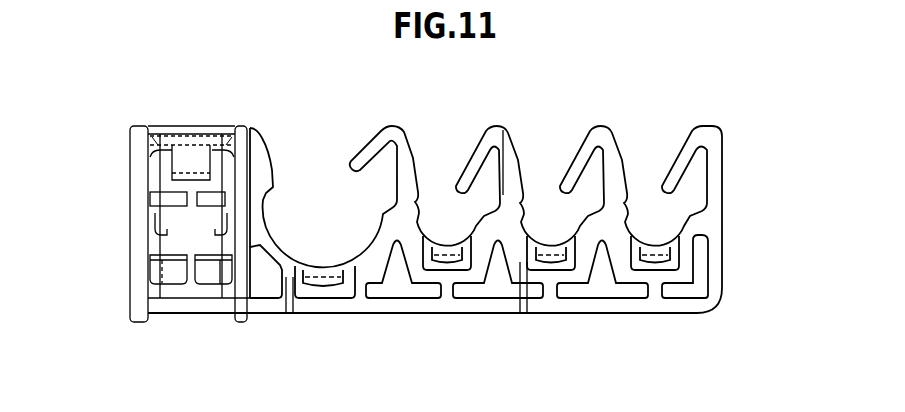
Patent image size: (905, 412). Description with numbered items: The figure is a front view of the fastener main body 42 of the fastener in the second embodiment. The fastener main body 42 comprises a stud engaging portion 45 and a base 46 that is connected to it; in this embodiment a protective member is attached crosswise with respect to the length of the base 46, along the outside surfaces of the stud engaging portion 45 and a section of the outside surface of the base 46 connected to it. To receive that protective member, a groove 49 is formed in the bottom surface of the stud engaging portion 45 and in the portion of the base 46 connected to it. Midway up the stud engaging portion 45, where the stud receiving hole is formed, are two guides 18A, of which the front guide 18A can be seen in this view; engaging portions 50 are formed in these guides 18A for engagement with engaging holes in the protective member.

The fastener main body 42 is at (731, 187).
The stud engaging portion 45 is at (146, 128).
The base 46 is at (337, 308).
The groove 49 is at (150, 319).
The engaging portions 50 is at (207, 197).
The guides 18A is at (167, 203).